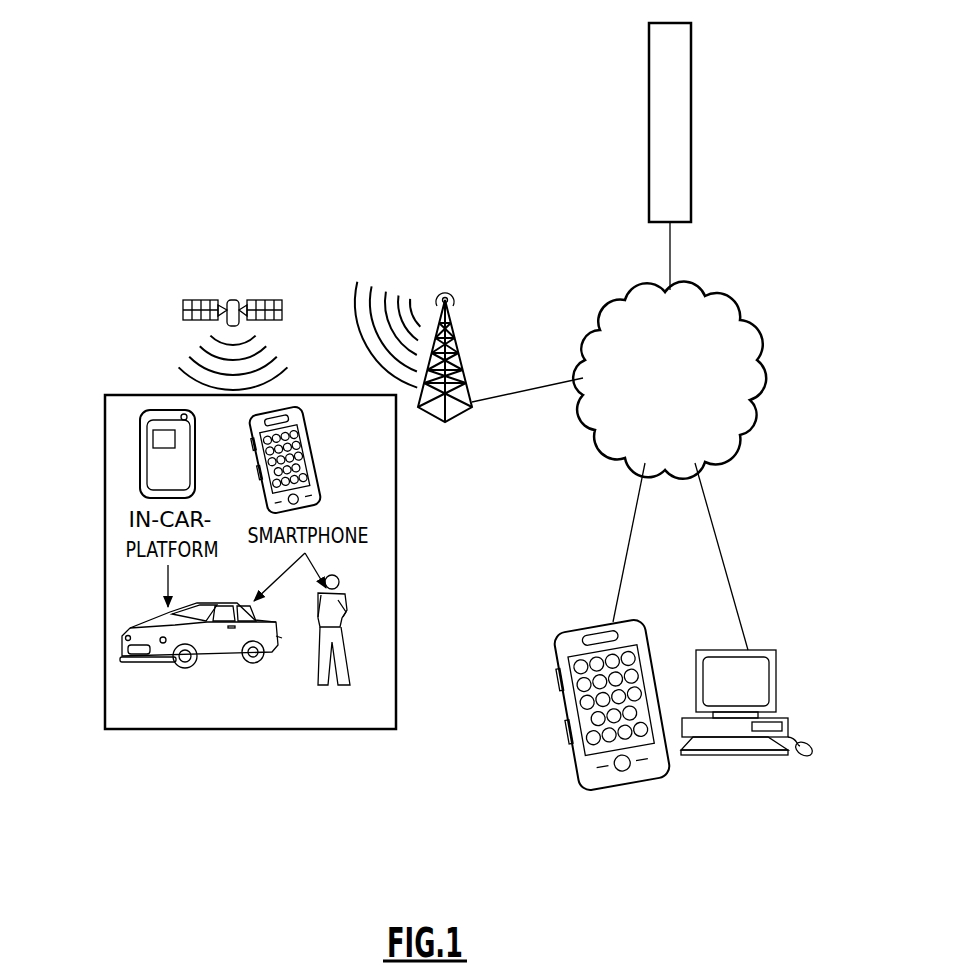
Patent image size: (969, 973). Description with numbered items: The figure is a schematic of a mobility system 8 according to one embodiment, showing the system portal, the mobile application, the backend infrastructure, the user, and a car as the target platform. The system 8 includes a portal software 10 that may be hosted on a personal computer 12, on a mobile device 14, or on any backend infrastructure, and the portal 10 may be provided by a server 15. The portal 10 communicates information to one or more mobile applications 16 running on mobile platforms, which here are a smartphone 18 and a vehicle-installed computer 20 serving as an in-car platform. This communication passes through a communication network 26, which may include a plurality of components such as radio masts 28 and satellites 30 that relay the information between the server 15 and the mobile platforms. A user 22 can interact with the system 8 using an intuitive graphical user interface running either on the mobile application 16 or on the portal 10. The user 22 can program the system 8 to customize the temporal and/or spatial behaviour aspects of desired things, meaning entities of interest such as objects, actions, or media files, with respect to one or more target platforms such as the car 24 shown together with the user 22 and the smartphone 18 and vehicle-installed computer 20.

The mobility system 8 is at (801, 262).
The portal software 10 is at (552, 705).
The personal computer 12 is at (712, 650).
The mobile device 14 is at (583, 625).
The server 15 is at (691, 108).
The mobile application 16 is at (300, 442).
The smartphone 18 is at (318, 470).
The vehicle-installed computer 20 is at (152, 440).
The user 22 is at (350, 662).
The car 24 is at (123, 640).
The communication network 26 is at (750, 353).
The radio mast 28 is at (458, 340).
The satellite 30 is at (183, 311).